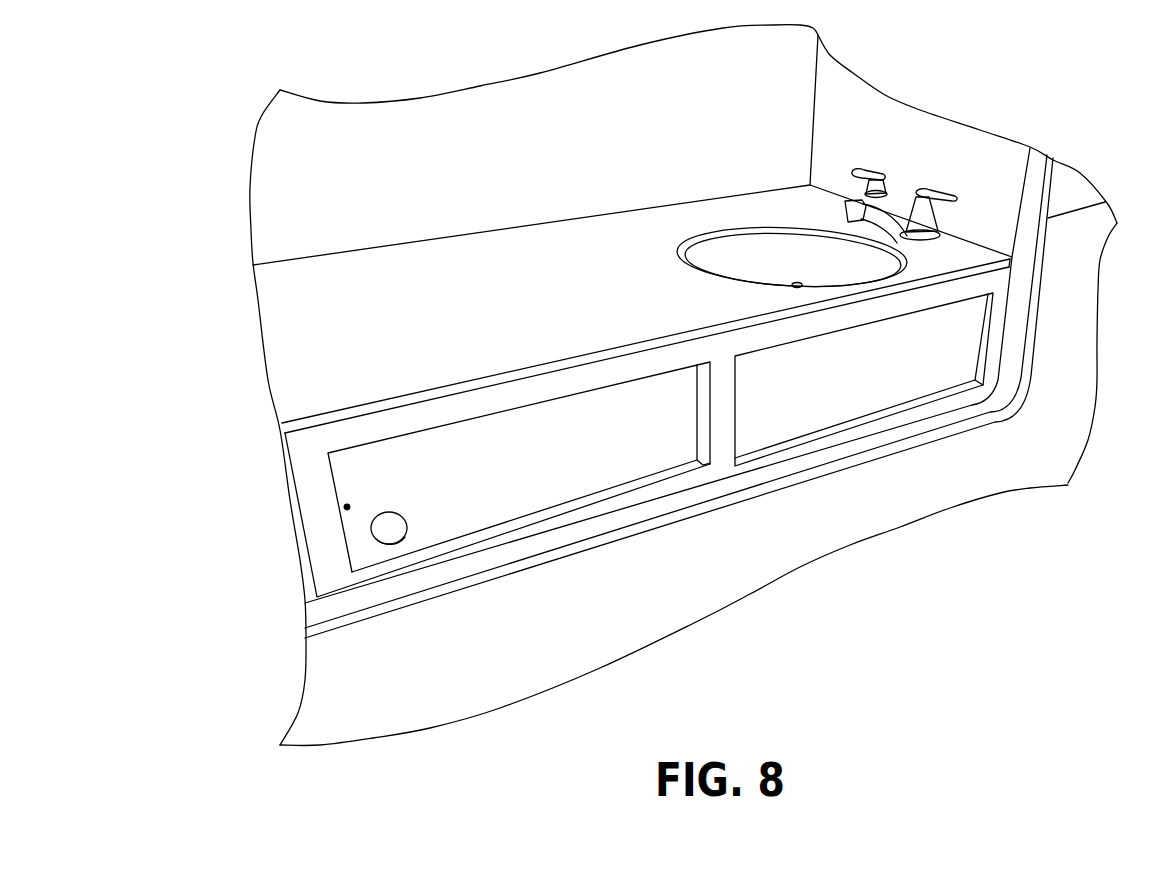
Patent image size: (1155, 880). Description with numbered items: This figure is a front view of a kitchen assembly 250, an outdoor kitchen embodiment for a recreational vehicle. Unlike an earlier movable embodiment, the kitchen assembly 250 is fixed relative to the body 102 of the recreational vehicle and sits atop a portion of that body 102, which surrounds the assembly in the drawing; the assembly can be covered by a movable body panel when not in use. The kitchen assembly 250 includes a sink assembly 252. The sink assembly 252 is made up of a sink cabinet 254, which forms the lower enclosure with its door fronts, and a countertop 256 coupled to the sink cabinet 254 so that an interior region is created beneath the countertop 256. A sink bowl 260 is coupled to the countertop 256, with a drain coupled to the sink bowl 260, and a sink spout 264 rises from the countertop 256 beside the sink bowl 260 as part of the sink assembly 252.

The body 102 is at (933, 497).
The kitchen assembly 250 is at (225, 145).
The sink assembly 252 is at (657, 393).
The sink cabinet 254 is at (958, 338).
The countertop 256 is at (620, 275).
The sink bowl 260 is at (763, 232).
The sink spout 264 is at (888, 190).